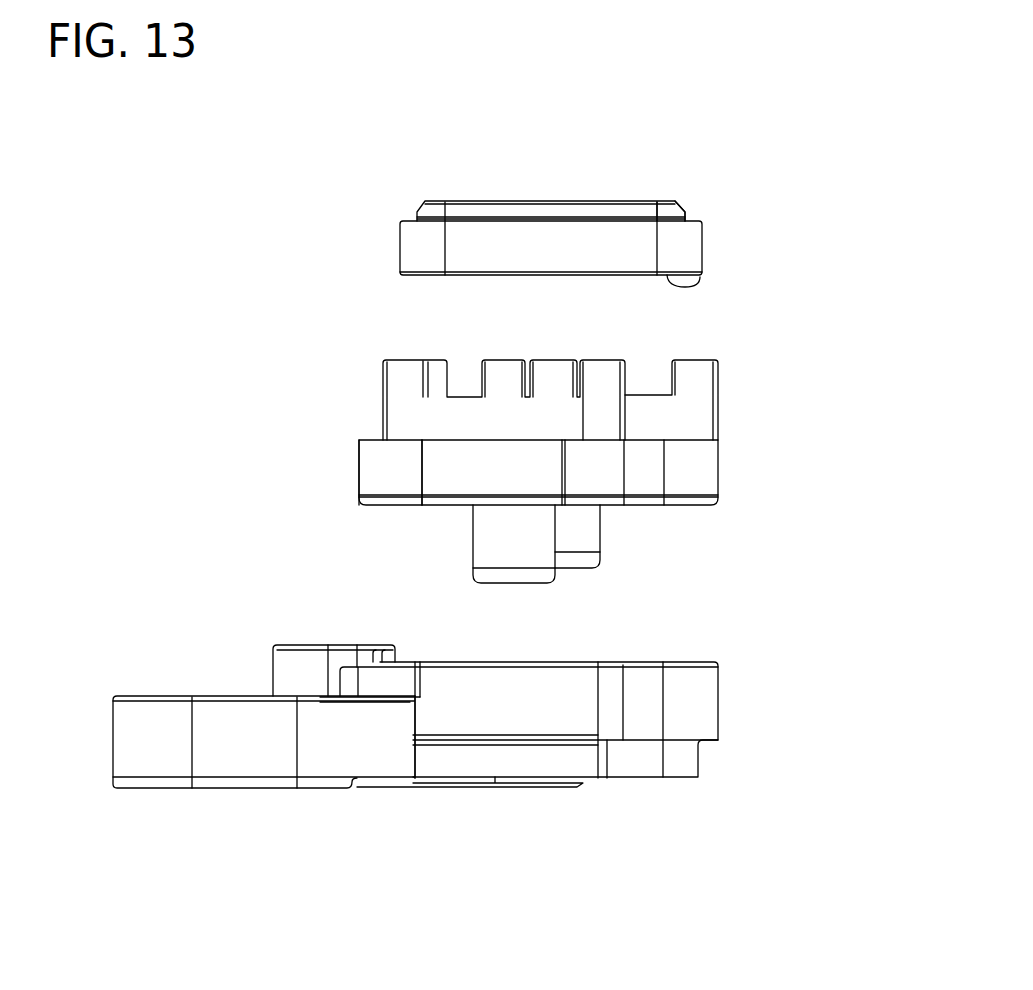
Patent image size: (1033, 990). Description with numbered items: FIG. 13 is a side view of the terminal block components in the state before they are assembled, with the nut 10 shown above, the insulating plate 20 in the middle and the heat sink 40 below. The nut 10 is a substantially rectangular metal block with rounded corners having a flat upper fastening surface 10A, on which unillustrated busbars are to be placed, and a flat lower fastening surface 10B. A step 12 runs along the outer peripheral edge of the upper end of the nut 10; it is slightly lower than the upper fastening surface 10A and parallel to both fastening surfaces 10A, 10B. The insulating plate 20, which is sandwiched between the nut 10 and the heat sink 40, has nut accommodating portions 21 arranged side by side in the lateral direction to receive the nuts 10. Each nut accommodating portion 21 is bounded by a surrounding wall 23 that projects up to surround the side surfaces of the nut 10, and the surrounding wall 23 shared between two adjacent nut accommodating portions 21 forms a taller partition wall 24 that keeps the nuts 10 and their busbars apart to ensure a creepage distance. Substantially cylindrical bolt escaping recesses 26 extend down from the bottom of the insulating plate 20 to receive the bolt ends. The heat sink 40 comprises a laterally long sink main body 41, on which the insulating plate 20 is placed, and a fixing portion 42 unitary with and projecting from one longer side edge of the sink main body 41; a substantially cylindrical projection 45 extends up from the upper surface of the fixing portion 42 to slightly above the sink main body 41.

The nut 10 is at (370, 257).
The upper fastening surface 10A is at (604, 201).
The lower fastening surface 10B is at (705, 278).
The step 12 is at (693, 217).
The insulating plate 20 is at (540, 471).
The nut accommodating portion 21 is at (349, 459).
The surrounding wall 23 is at (370, 477).
The partition wall 24 is at (403, 397).
The bolt escaping recess 26 is at (480, 539).
The heat sink 40 is at (446, 757).
The sink main body 41 is at (712, 702).
The fixing portion 42 is at (273, 765).
The cylindrical projection 45 is at (297, 680).